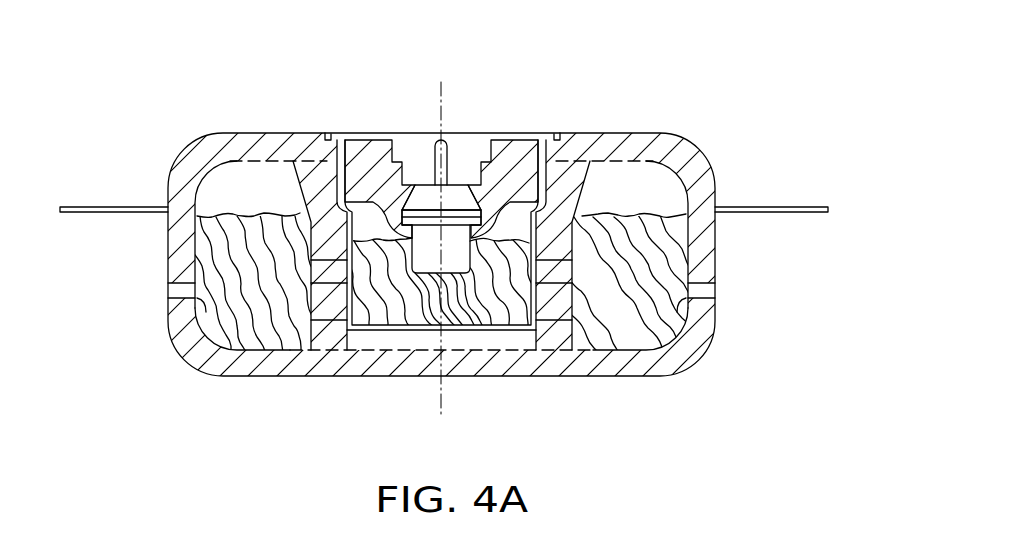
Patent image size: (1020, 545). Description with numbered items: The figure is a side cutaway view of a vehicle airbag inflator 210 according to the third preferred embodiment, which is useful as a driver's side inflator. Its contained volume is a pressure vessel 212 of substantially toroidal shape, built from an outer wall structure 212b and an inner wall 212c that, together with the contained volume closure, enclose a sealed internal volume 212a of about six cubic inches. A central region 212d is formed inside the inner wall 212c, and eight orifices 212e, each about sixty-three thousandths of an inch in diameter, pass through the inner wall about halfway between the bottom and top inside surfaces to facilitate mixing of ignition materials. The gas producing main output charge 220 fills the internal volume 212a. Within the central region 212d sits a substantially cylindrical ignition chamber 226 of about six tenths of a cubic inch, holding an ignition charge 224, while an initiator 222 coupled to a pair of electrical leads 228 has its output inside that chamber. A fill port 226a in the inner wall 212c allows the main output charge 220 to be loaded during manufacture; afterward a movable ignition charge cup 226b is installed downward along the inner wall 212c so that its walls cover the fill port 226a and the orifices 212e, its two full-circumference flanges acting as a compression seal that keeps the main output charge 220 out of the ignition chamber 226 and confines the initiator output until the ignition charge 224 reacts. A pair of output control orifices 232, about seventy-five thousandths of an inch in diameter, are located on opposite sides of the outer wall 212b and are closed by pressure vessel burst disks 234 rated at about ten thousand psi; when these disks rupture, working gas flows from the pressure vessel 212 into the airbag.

The vehicle airbag inflator 210 is at (726, 61).
The pressure vessel 212 is at (205, 126).
The internal volume 212a is at (247, 173).
The outer wall structure 212b is at (676, 350).
The inner wall 212c is at (541, 252).
The central region 212d is at (485, 297).
The orifices 212e is at (316, 250).
The main output charge 220 is at (327, 297).
The initiator 222 is at (481, 250).
The ignition charge 224 is at (403, 310).
The ignition chamber 226 is at (373, 300).
The fill port 226a is at (343, 297).
The ignition charge cup 226b is at (287, 300).
The electrical leads 228 is at (450, 136).
The output control orifices 232 is at (178, 290).
The pressure vessel burst disks 234 is at (257, 300).